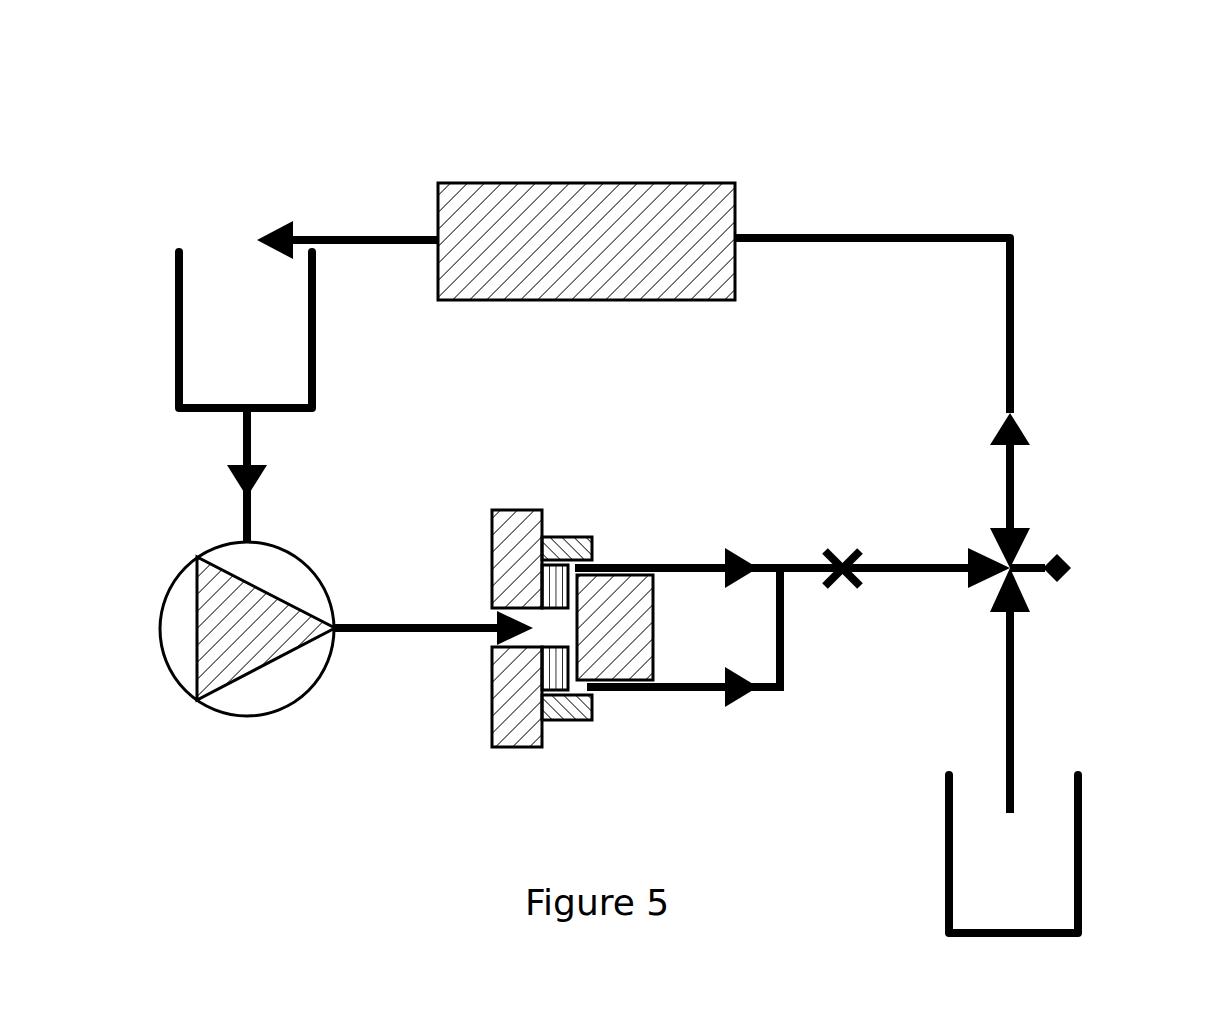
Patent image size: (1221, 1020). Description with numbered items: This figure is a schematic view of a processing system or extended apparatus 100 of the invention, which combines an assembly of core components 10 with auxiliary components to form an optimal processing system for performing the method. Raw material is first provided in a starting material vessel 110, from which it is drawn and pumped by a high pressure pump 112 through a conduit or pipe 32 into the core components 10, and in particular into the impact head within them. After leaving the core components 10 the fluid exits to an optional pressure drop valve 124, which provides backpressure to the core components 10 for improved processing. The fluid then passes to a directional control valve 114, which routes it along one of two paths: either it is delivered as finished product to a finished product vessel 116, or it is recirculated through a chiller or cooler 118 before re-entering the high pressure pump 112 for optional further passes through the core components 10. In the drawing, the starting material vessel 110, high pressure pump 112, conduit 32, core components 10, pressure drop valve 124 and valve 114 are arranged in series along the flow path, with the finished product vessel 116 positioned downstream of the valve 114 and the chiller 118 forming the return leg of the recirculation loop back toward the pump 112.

The system or extended apparatus 100 is at (1016, 104).
The chiller/cooler 118 is at (718, 183).
The starting material vessel 110 is at (272, 333).
The high pressure pump 112 is at (297, 680).
The conduit/pipe 32 is at (515, 563).
The assembly of core components 10 is at (622, 503).
The pressure drop valve 124 is at (842, 550).
The valve 114 is at (1028, 538).
The finished product vessel 116 is at (1040, 885).